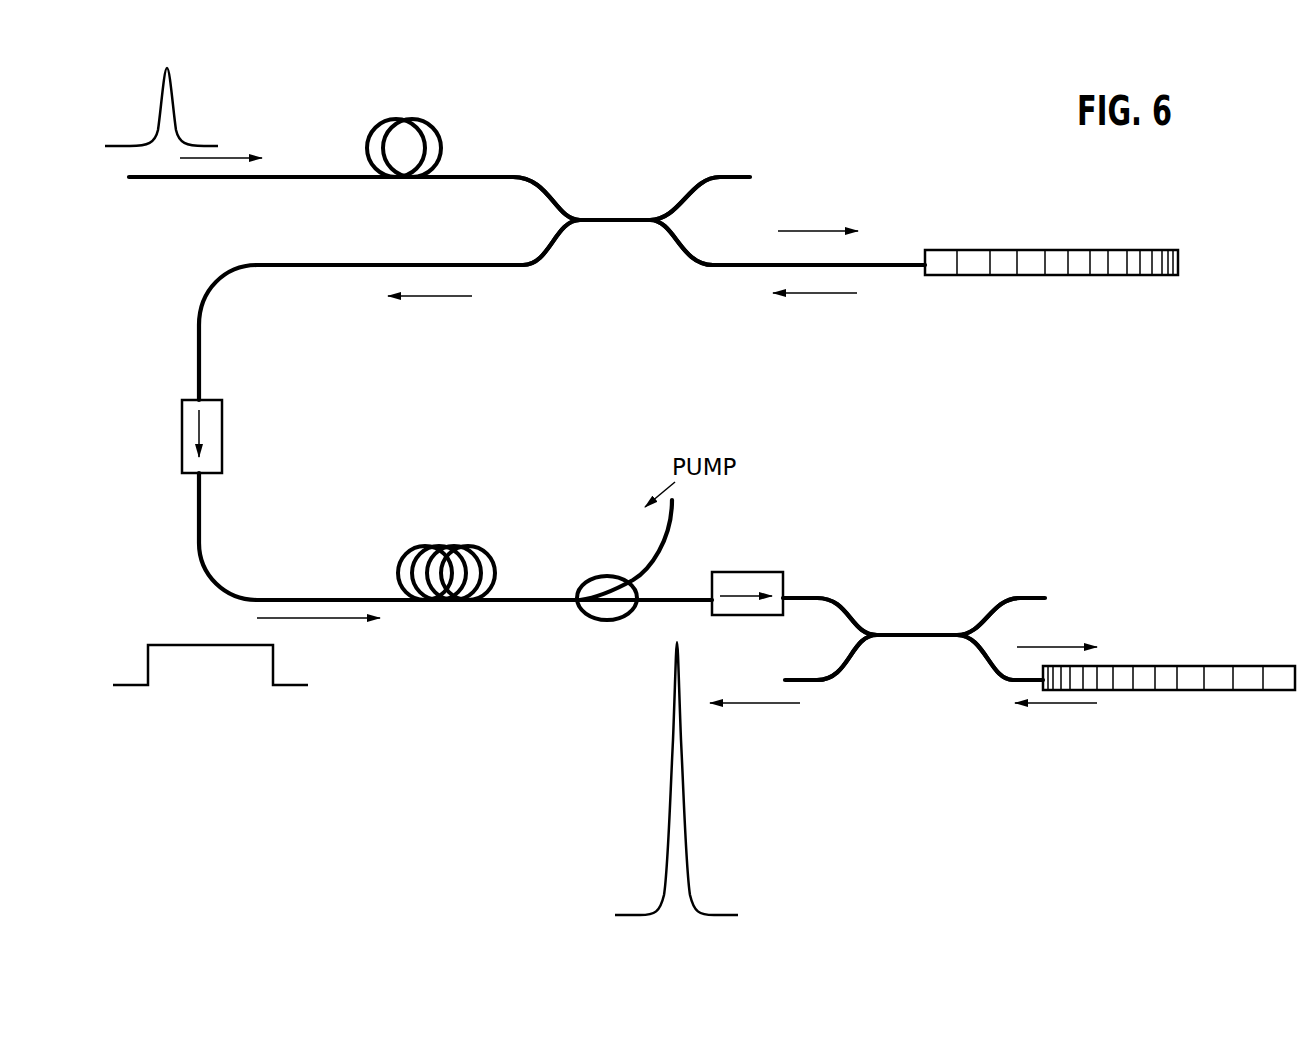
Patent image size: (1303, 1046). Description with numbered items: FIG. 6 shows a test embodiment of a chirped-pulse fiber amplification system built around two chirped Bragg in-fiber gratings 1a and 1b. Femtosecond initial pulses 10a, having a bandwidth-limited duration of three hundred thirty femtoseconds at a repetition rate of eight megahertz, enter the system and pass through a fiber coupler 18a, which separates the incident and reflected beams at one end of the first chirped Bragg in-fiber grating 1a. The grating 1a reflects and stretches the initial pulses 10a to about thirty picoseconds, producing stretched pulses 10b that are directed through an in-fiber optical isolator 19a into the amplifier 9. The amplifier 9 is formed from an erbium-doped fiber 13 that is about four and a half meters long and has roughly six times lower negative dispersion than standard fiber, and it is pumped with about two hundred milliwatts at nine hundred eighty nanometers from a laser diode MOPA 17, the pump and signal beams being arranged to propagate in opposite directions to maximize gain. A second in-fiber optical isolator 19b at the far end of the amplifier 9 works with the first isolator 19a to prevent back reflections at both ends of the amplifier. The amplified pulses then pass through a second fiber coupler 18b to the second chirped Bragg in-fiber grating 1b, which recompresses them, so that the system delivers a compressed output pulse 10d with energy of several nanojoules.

The initial pulses 10a is at (172, 102).
The erbium-doped fiber 13 is at (425, 125).
The fiber coupler 18a is at (634, 145).
The chirped Bragg in-fiber grating 1a is at (990, 250).
The in-fiber optical isolator 19a is at (223, 430).
The amplifier 9 is at (438, 545).
The laser diode MOPA 17 is at (632, 575).
The in-fiber optical isolator 19b is at (783, 575).
The fiber coupler 18b is at (915, 578).
The chirped Bragg in-fiber grating 1b is at (1213, 670).
The stretched pulses 10b is at (253, 686).
The compressed output pulse 10d is at (682, 800).